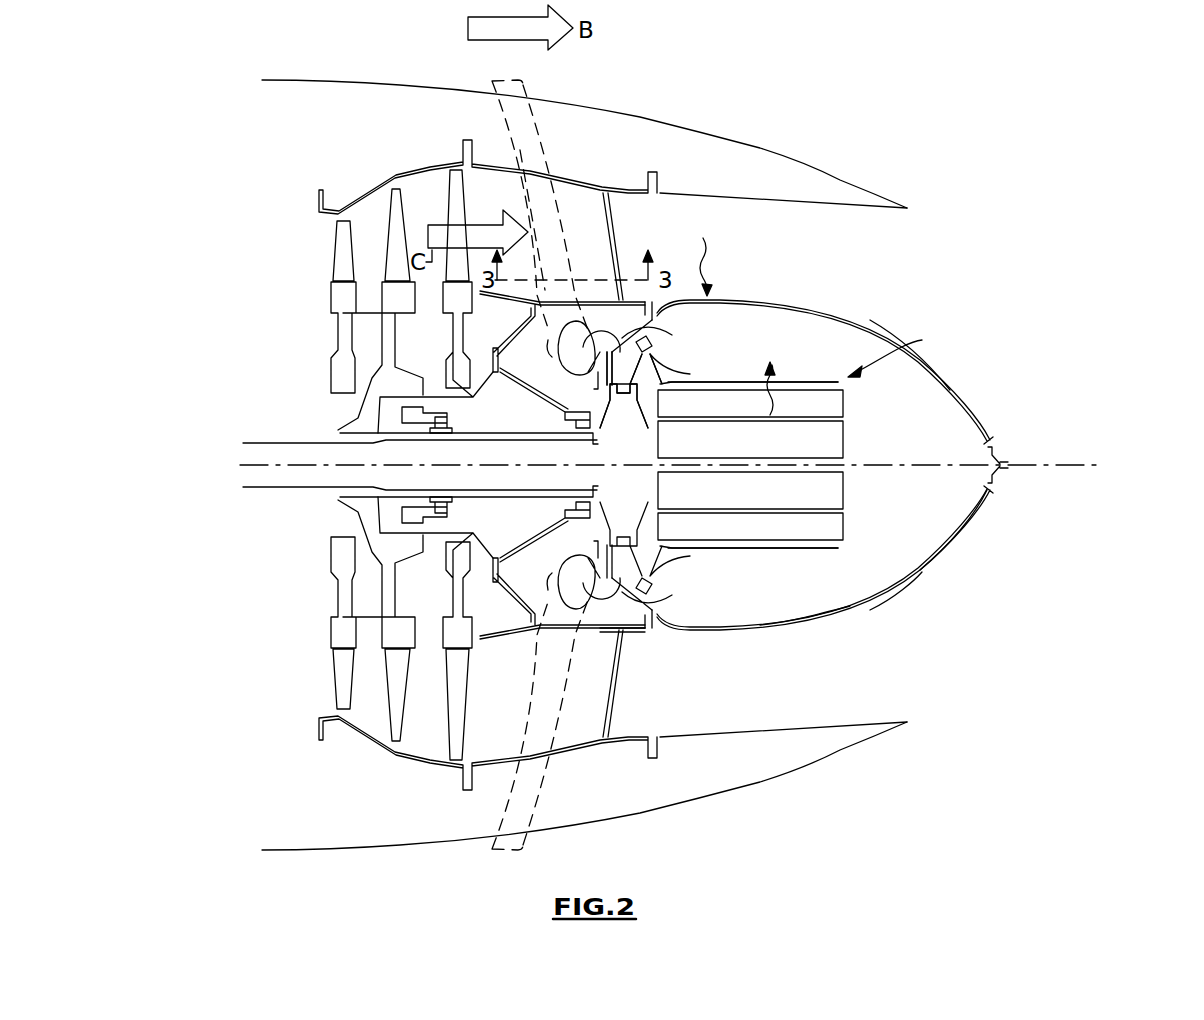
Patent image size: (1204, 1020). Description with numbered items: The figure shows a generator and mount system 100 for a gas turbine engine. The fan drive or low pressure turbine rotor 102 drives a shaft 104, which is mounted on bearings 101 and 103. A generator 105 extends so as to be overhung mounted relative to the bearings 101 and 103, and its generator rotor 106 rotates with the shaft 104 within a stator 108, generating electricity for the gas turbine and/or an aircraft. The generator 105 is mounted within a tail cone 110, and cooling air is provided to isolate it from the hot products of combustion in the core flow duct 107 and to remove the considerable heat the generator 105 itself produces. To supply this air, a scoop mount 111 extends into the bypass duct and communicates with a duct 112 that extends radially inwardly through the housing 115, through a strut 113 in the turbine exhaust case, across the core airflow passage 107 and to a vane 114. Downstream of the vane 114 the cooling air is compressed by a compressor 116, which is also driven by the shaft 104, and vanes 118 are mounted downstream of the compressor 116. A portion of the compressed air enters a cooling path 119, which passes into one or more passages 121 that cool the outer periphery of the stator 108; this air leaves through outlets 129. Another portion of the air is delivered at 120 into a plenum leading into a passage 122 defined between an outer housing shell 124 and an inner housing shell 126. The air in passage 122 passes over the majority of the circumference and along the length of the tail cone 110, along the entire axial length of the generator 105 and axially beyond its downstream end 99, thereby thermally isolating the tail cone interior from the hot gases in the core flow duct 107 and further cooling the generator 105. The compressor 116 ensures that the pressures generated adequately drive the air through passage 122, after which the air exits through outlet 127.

The generator and mount system 100 is at (1065, 198).
The downstream end 99 is at (845, 537).
The bearing 101 is at (455, 420).
The low pressure turbine rotor 102 is at (333, 300).
The bearing 103 is at (600, 437).
The shaft 104 is at (286, 440).
The generator 105 is at (908, 351).
The generator rotor 106 is at (825, 445).
The core flow duct 107 is at (851, 286).
The stator 108 is at (835, 525).
The tail cone 110 is at (890, 330).
The scoop mount 111 is at (492, 82).
The duct 112 is at (525, 122).
The strut 113 is at (588, 230).
The vane 114 is at (598, 372).
The housing 115 is at (401, 92).
The compressor 116 is at (575, 363).
The vanes 118 is at (658, 342).
The cooling path 119 is at (665, 375).
The air delivery location 120 is at (678, 623).
The passages 121 is at (835, 388).
The passage 122 is at (928, 565).
The outer housing shell 124 is at (900, 595).
The inner housing shell 126 is at (835, 605).
The outlet 127 is at (1005, 462).
The outlets 129 is at (992, 432).